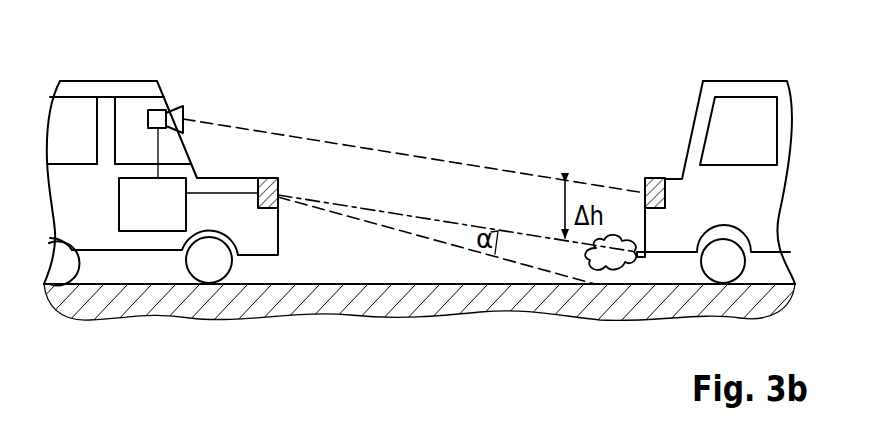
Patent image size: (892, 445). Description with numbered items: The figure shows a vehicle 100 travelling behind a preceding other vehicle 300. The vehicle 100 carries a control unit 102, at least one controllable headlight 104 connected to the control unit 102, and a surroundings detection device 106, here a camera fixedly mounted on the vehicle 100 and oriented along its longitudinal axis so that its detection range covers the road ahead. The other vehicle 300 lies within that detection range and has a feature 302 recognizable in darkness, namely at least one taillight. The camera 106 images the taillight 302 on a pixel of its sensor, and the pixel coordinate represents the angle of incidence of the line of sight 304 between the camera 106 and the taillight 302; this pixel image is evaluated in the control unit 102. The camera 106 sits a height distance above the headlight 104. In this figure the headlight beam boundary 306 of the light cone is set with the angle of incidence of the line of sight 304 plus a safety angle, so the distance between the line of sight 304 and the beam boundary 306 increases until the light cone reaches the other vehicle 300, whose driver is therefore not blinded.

The vehicle 100 is at (103, 81).
The control unit 102 is at (152, 231).
The headlight 104 is at (272, 208).
The surroundings detection device 106 is at (176, 107).
The other vehicle 300 is at (745, 81).
The feature 302 is at (657, 178).
The line of sight 304 is at (458, 160).
The headlight beam boundary 306 is at (423, 230).